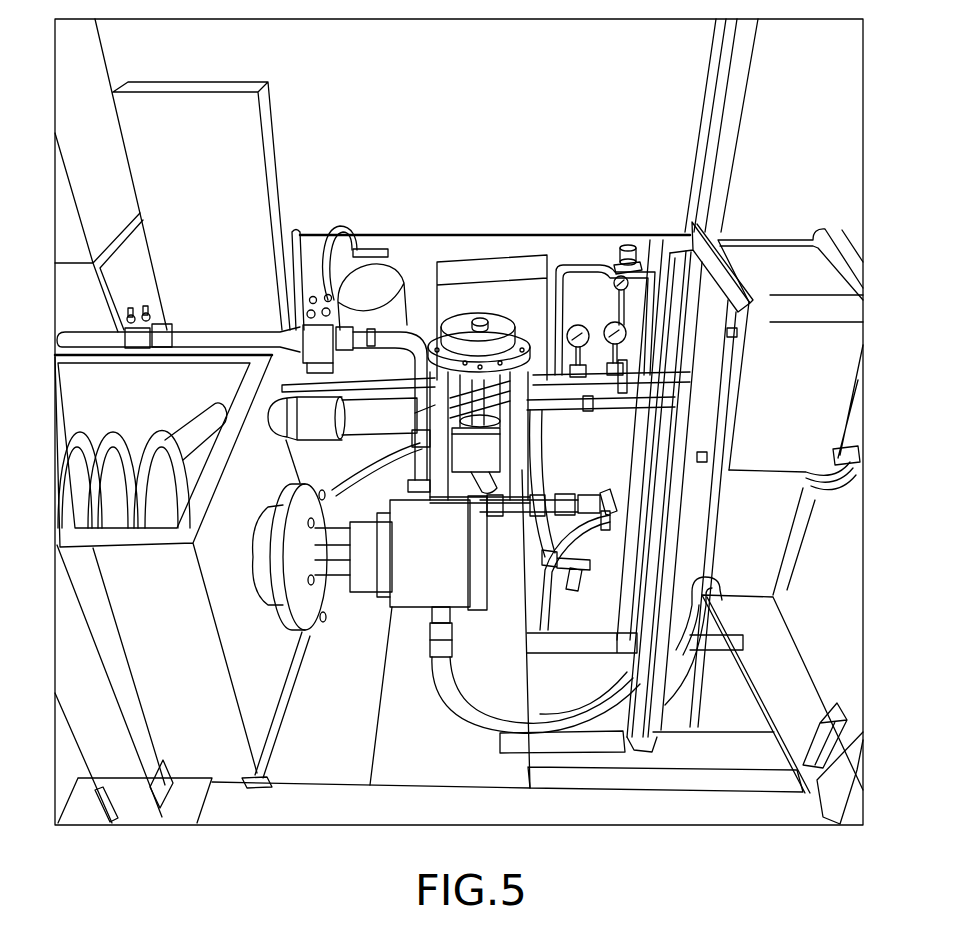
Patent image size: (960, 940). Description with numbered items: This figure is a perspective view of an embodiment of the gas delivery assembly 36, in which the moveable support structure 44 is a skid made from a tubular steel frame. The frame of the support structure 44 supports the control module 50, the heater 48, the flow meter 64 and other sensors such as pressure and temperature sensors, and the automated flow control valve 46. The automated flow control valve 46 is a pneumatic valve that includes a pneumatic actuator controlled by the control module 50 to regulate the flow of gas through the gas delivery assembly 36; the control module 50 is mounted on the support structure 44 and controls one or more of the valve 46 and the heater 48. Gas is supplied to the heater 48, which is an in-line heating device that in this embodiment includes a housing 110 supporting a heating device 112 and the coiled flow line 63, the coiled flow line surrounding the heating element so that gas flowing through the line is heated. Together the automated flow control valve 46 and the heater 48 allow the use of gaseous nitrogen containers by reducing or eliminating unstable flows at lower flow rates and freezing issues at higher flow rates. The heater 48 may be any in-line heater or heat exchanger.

The gas delivery assembly 36 is at (863, 68).
The moveable support structure 44 is at (708, 166).
The automated flow control valve 46 is at (497, 322).
The heater 48 is at (95, 537).
The control module 50 is at (777, 435).
The coiled flow line 63 is at (155, 447).
The flow meter 64 is at (268, 225).
The housing 110 is at (270, 717).
The heating device 112 is at (416, 588).